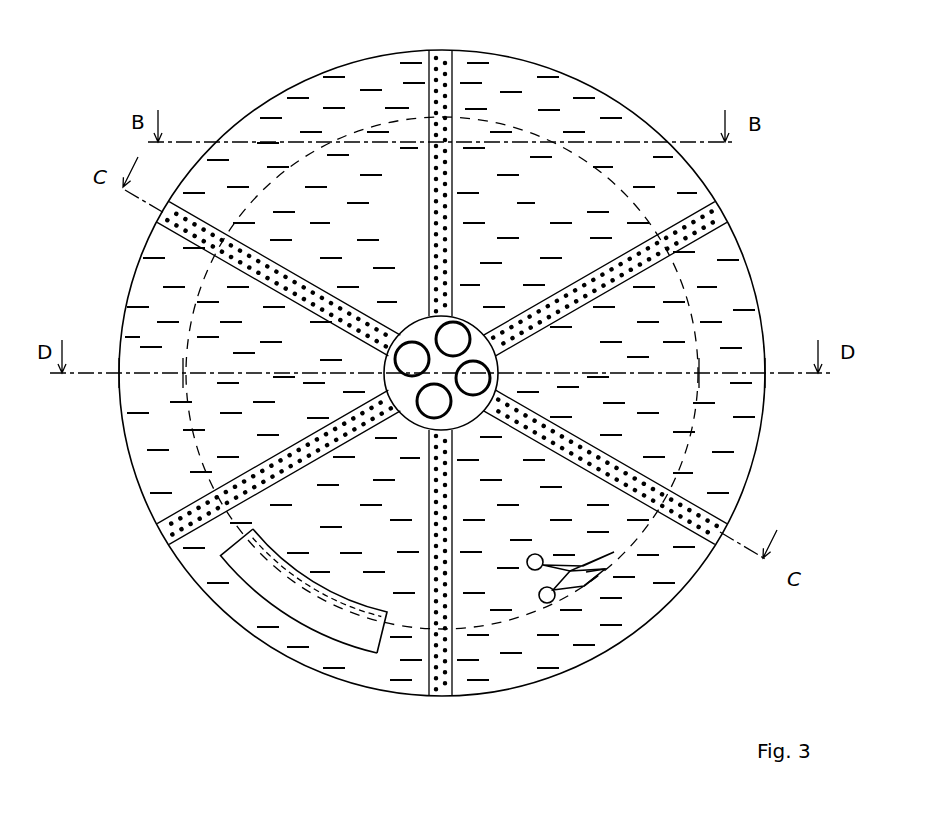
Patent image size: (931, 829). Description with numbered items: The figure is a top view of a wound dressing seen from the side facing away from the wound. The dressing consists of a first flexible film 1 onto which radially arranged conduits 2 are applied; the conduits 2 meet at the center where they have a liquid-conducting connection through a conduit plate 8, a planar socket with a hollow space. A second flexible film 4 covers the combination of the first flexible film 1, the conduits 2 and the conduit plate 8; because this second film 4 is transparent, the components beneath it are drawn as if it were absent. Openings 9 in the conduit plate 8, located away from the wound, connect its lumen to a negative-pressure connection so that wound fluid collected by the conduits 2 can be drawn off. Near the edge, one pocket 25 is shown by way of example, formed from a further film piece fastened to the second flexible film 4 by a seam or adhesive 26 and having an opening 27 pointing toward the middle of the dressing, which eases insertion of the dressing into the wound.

The first flexible film 1 is at (718, 413).
The conduit 2 is at (448, 75).
The second flexible film 4 is at (712, 440).
The conduit plate 8 is at (490, 365).
The openings 9 is at (453, 342).
The pocket 25 is at (300, 592).
The seam or adhesive 26 is at (307, 625).
The opening 27 is at (225, 572).